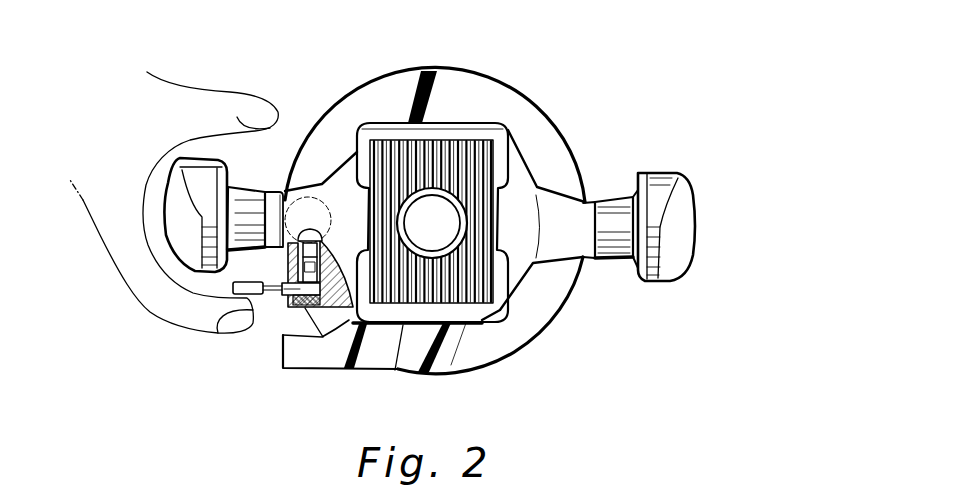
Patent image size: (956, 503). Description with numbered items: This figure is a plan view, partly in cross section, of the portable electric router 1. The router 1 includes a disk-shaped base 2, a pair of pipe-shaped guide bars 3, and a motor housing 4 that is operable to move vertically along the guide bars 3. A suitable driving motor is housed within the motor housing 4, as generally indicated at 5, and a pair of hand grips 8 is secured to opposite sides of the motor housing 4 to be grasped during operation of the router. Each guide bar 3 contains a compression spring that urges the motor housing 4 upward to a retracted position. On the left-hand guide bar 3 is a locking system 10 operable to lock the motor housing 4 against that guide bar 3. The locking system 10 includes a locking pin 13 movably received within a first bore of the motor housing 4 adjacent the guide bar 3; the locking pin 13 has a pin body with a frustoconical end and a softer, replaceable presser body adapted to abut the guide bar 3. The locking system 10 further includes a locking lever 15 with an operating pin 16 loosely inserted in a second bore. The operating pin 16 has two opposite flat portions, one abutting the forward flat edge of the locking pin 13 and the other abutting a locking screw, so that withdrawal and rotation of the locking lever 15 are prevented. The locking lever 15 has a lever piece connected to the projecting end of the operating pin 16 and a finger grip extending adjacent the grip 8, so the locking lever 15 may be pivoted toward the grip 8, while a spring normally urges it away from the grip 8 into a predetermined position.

The portable electric router 1 is at (530, 103).
The base 2 is at (537, 140).
The guide bars 3 is at (306, 230).
The motor housing 4 is at (510, 263).
The driving motor 5 is at (480, 325).
The hand grips 8 is at (680, 225).
The locking system 10 is at (228, 286).
The locking pin 13 is at (335, 310).
The locking lever 15 is at (247, 297).
The operating pin 16 is at (283, 291).